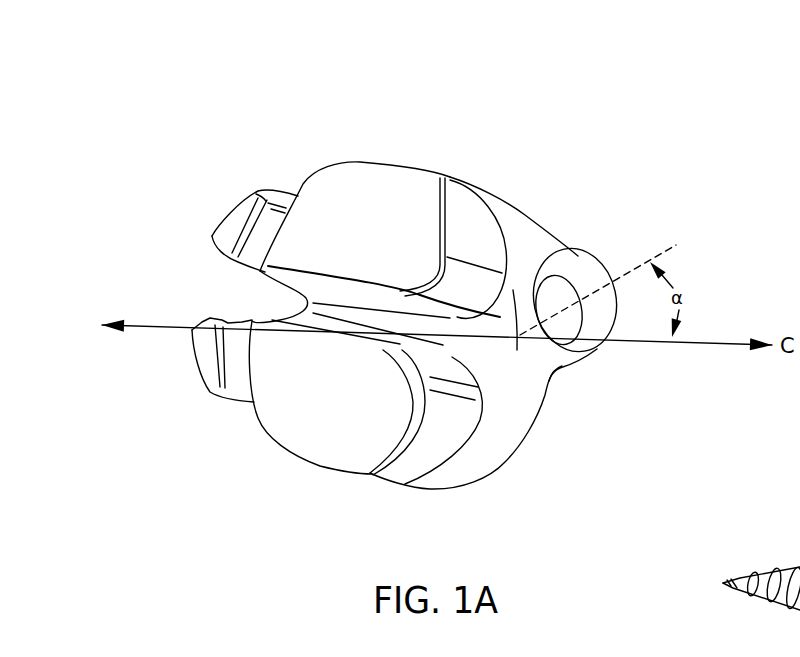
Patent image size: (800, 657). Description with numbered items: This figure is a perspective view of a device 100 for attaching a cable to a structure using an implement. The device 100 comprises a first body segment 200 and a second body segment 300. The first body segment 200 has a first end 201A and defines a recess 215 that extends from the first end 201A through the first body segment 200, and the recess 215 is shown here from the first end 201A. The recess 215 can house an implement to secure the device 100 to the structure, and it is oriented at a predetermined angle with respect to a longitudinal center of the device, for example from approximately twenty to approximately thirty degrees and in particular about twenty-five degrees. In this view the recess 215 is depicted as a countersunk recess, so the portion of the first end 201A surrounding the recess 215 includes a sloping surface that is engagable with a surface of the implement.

The device 100 is at (465, 109).
The first end 201A is at (590, 178).
The first body segment 200 is at (506, 498).
The recess 215 is at (612, 348).
The second body segment 300 is at (302, 496).